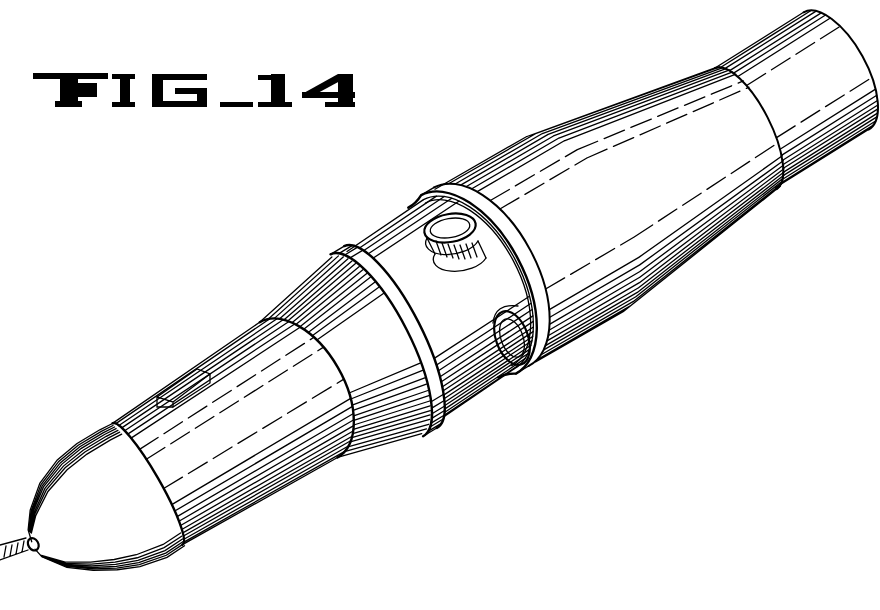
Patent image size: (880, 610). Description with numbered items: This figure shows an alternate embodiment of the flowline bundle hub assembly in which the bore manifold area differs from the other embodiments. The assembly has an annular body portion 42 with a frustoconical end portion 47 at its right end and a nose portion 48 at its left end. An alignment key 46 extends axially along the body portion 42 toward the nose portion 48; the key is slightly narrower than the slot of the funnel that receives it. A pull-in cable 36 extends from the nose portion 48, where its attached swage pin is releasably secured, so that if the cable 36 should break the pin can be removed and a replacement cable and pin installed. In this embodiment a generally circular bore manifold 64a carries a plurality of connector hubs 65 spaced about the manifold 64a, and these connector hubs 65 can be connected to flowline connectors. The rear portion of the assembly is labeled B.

The nose portion 48 is at (78, 447).
The pull-in cable 36 is at (27, 553).
The alignment key 46 is at (186, 380).
The annular body portion 42 is at (259, 331).
The frustoconical end portion 47 is at (306, 280).
The bore manifold 64a is at (496, 252).
The connector hubs 65 is at (456, 250).
The tail section B is at (797, 171).